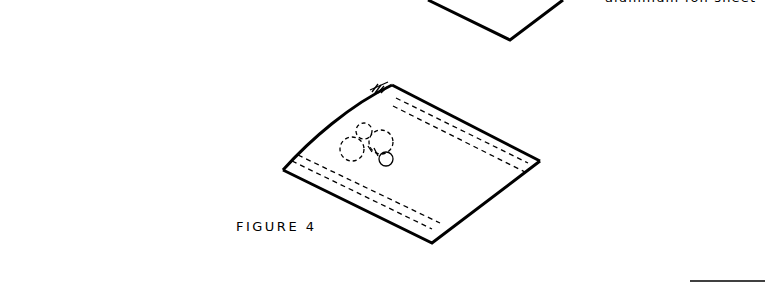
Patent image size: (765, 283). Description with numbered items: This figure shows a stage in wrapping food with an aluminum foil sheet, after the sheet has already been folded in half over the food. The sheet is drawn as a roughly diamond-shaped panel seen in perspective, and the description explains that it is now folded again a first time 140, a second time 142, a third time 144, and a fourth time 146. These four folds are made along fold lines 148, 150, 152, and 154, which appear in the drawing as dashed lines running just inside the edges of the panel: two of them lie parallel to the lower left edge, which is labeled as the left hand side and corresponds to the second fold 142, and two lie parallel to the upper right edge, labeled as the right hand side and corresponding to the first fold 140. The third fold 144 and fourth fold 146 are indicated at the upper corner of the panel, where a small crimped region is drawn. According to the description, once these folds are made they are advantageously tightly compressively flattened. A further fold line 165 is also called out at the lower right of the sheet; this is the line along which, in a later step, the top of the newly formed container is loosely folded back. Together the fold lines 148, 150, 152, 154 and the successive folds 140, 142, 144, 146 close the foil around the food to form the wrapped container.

The first fold 140 is at (290, 152).
The second fold 142 is at (380, 256).
The third fold 144 is at (385, 80).
The fourth fold 146 is at (372, 90).
The fold line 148 is at (442, 233).
The fold line 150 is at (415, 218).
The fold line 152 is at (540, 159).
The fold line 154 is at (518, 168).
The fold line 165 is at (662, 273).